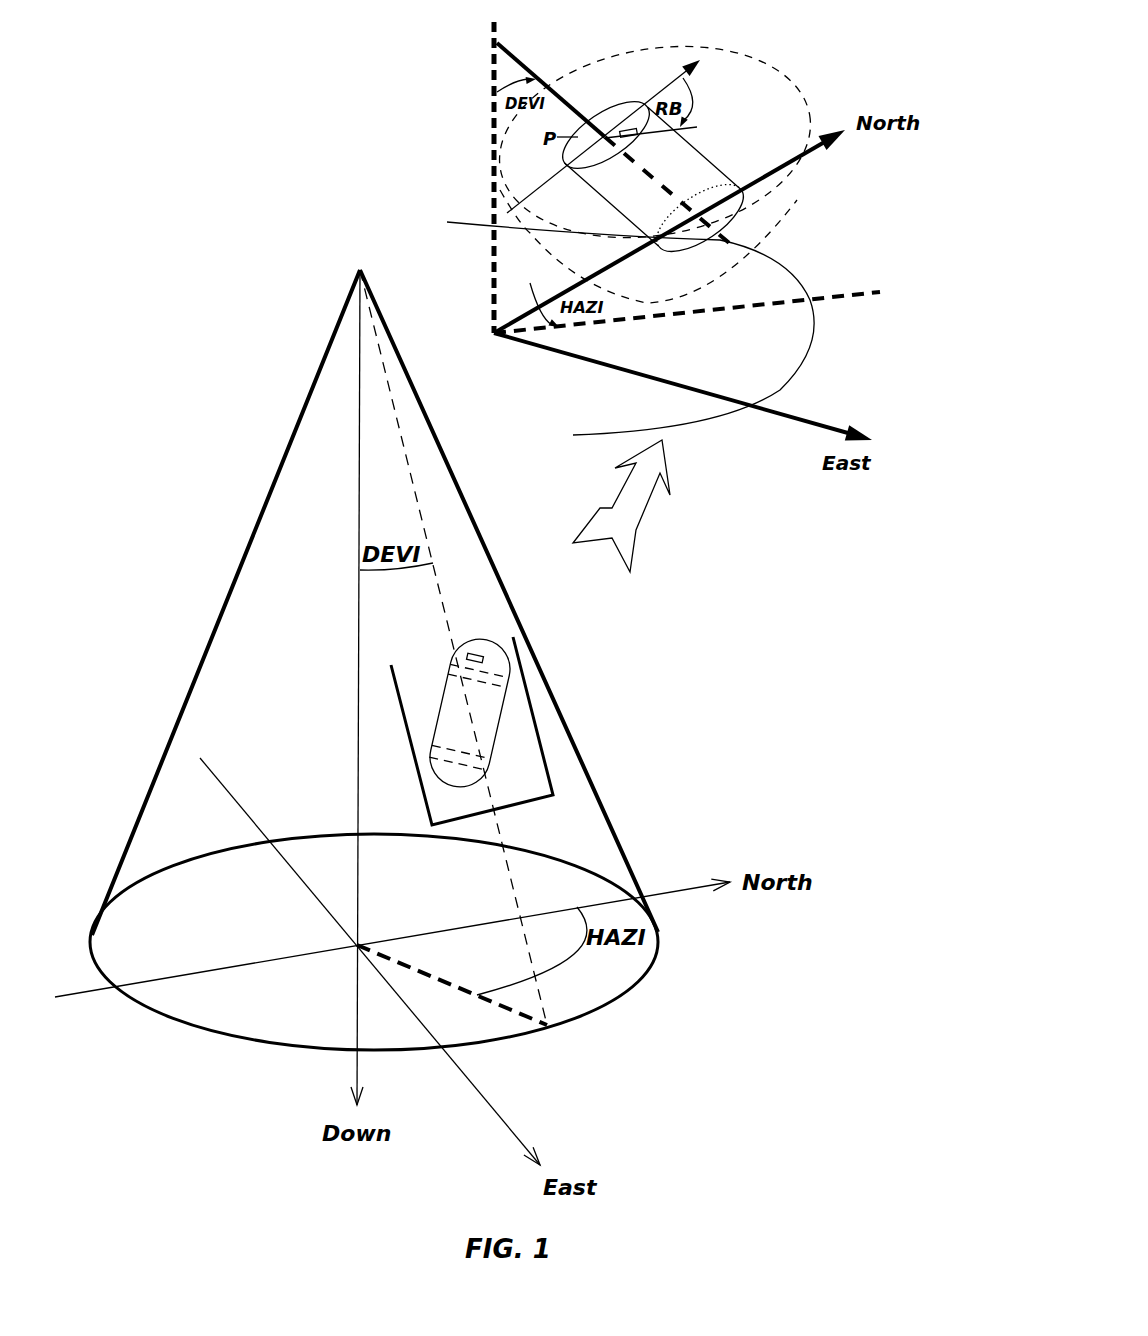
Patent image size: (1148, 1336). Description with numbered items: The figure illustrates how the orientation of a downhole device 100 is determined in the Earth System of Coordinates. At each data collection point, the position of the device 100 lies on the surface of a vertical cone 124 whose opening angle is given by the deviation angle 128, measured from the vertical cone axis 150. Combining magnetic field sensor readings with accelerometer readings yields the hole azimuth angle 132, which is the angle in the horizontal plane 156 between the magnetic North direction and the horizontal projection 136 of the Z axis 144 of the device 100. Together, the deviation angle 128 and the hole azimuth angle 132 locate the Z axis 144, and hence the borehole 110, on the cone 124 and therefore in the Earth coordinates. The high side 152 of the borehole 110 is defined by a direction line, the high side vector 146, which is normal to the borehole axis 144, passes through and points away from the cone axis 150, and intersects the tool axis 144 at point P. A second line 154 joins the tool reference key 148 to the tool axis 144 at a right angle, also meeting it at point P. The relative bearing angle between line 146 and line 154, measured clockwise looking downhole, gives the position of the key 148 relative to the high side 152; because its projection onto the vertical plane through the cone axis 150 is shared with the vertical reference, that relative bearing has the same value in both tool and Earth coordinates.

The device 100 is at (455, 635).
The borehole 110 is at (392, 722).
The vertical cone 124 is at (254, 420).
The DEVI 128 is at (380, 582).
The Hole Azimuth (HAZI) angle 132 is at (575, 953).
The horizontal projection 136 is at (408, 965).
The Z axis 144 is at (517, 900).
The high side vector 146 is at (663, 84).
The key 148 is at (487, 657).
The cone axis 150 is at (358, 874).
The high side 152 is at (547, 753).
The line 154 is at (675, 133).
The horizontal plane 156 is at (227, 1032).